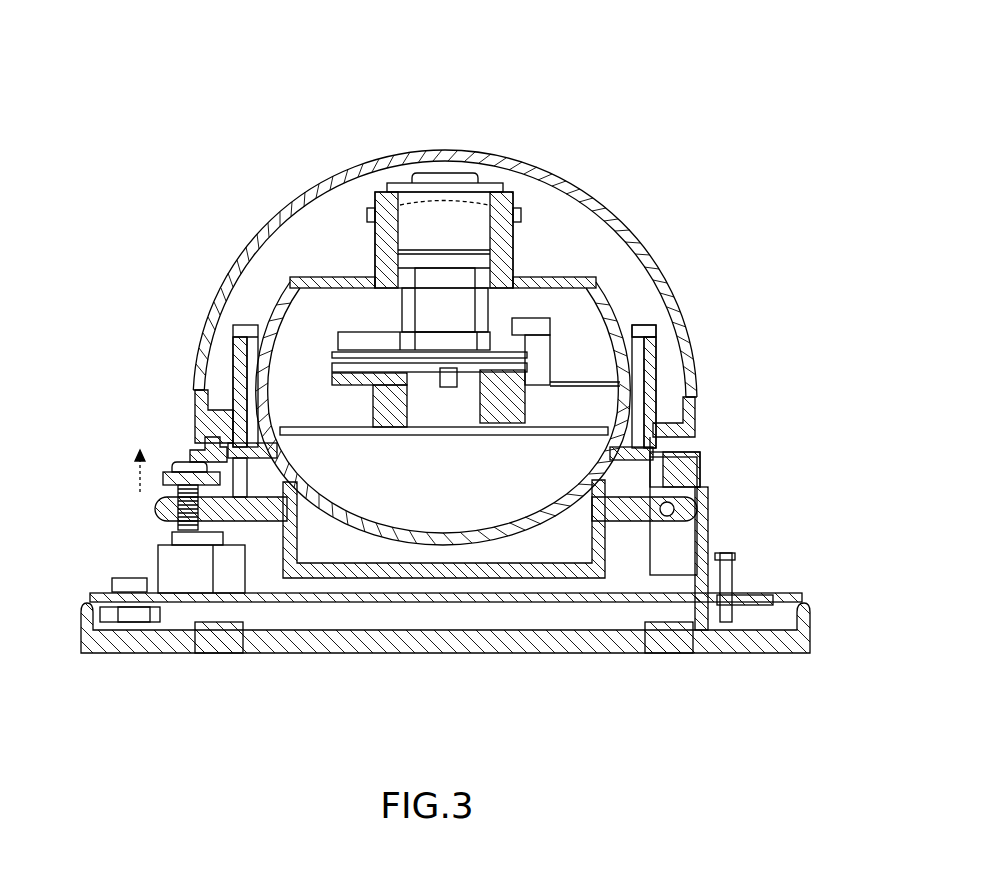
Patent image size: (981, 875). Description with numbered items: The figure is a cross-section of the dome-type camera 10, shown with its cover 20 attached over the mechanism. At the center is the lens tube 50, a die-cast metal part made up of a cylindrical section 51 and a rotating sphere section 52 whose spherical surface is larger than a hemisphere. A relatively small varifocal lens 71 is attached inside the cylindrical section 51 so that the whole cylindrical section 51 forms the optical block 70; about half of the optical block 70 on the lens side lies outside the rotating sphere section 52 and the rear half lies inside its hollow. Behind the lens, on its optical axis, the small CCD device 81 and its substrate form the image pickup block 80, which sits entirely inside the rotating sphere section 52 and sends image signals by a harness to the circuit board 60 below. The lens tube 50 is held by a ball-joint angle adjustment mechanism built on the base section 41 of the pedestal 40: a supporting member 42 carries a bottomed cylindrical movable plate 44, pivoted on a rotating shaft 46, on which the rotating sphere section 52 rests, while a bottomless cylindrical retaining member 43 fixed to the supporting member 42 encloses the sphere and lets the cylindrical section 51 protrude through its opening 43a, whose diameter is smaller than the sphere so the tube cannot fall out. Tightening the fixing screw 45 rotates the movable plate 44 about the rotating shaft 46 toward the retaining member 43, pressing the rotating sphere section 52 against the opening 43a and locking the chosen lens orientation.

The dome-type camera 10 is at (453, 88).
The cover 20 is at (538, 173).
The optical block 70 is at (436, 212).
The lens 71 is at (428, 172).
The lens tube 50 is at (521, 216).
The cylindrical section 51 is at (488, 312).
The rotating sphere section 52 is at (632, 388).
The image pickup block 80 is at (444, 372).
The CCD device 81 is at (513, 403).
The retaining member 43 is at (499, 386).
The opening 43a is at (635, 322).
The fixing screw 45 is at (188, 457).
The movable plate 44 is at (155, 507).
The rotating shaft 46 is at (700, 510).
The supporting member 42 is at (675, 545).
The circuit board 60 is at (590, 605).
The pedestal 40 is at (445, 665).
The base section 41 is at (155, 640).